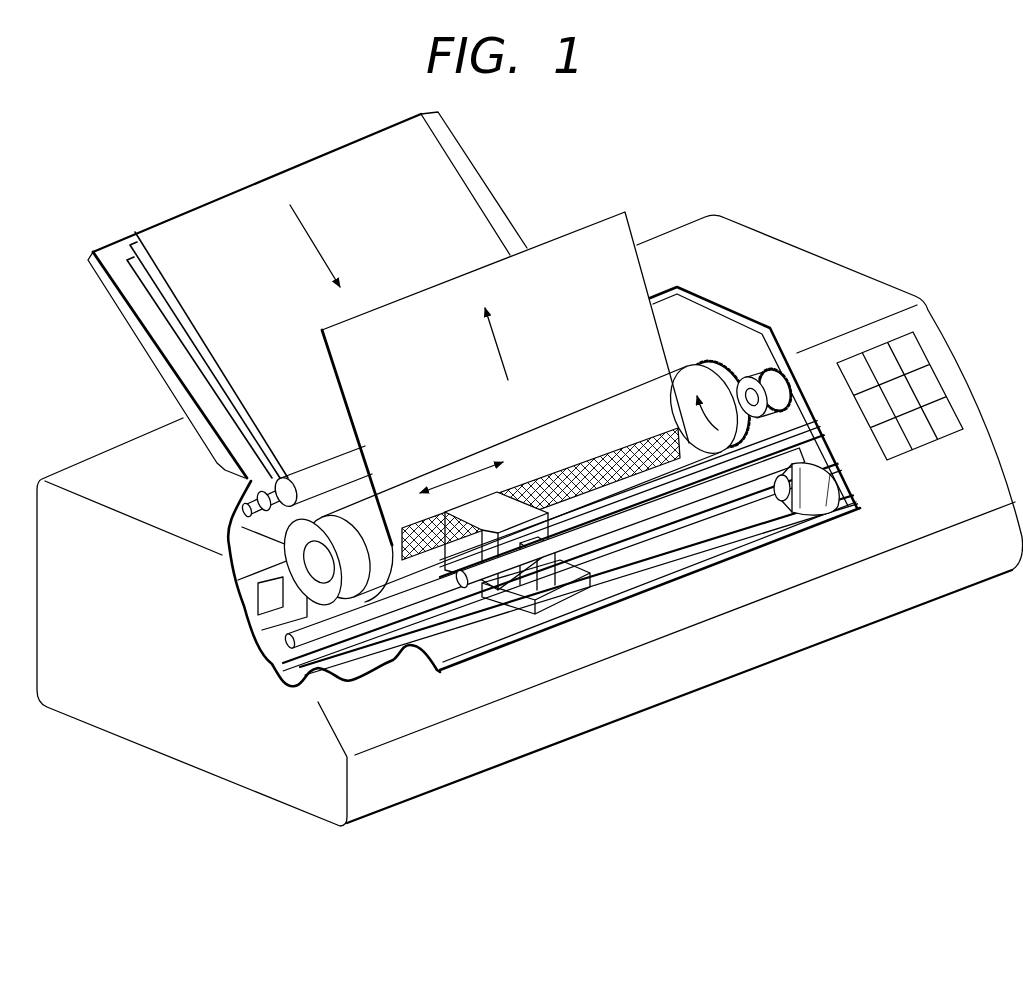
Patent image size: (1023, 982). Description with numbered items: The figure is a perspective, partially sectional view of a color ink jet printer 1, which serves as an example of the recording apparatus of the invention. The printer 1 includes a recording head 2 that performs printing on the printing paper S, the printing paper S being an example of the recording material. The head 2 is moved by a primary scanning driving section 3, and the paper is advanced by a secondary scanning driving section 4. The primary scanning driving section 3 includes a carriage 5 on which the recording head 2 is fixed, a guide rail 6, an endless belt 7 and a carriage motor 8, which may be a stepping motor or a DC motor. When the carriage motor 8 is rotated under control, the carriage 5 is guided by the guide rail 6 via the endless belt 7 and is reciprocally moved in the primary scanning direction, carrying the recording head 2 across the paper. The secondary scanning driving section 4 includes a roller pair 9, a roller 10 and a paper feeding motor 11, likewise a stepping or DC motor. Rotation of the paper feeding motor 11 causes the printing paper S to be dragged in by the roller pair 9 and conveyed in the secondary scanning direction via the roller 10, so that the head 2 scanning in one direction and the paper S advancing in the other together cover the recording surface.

The color ink jet printer 1 is at (768, 190).
The recording head 2 is at (513, 505).
The primary scanning driving section 3 is at (367, 705).
The secondary scanning driving section 4 is at (165, 469).
The carriage 5 is at (580, 596).
The guide rail 6 is at (265, 635).
The endless belt 7 is at (372, 632).
The carriage motor 8 is at (330, 677).
The roller pair 9 is at (332, 472).
The roller 10 is at (377, 522).
The paper feeding motor 11 is at (763, 377).
The printing paper S is at (207, 313).